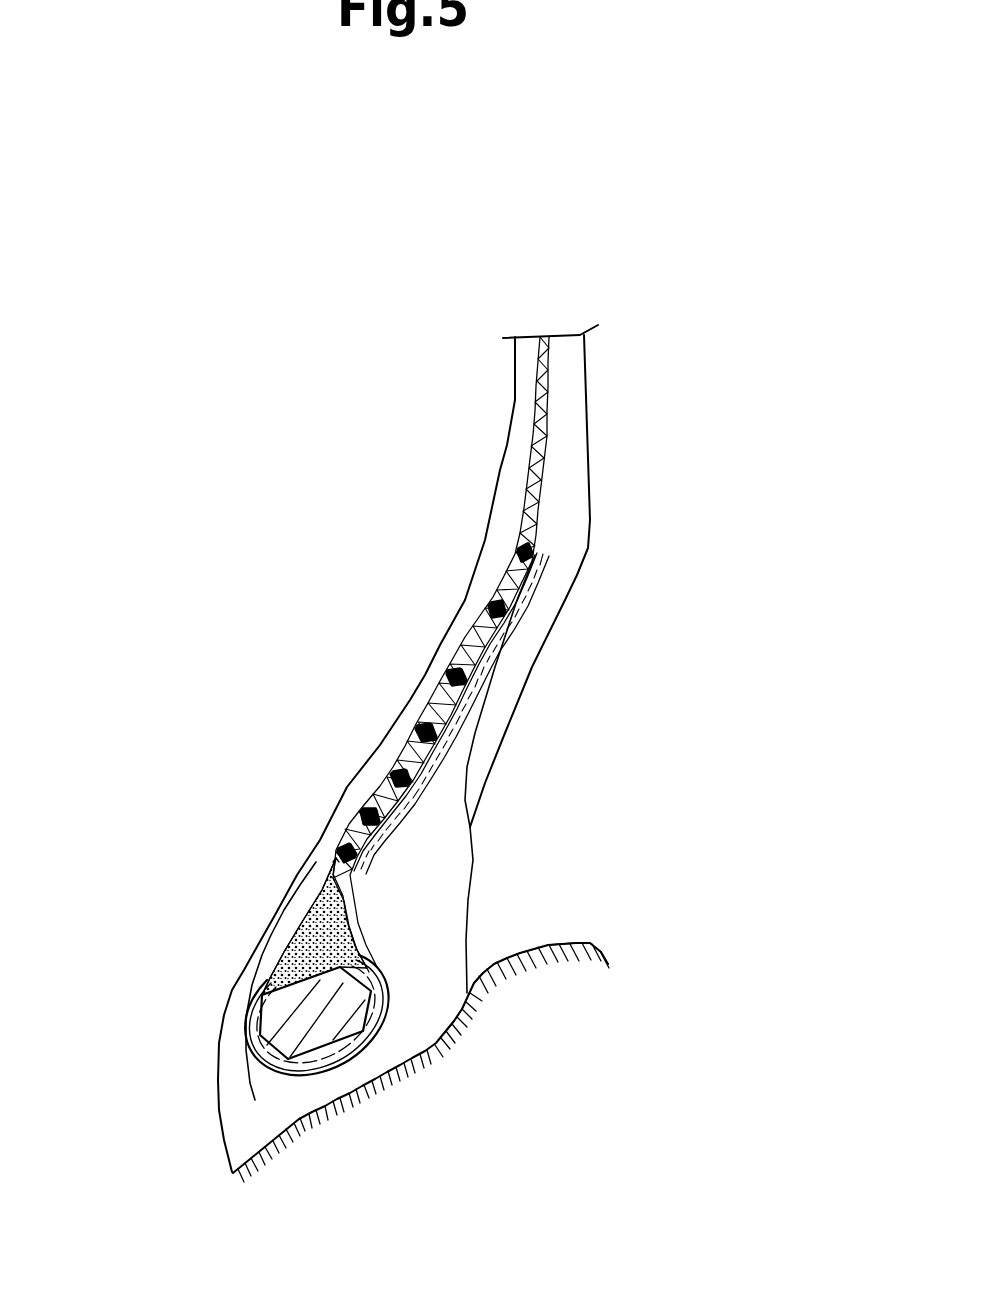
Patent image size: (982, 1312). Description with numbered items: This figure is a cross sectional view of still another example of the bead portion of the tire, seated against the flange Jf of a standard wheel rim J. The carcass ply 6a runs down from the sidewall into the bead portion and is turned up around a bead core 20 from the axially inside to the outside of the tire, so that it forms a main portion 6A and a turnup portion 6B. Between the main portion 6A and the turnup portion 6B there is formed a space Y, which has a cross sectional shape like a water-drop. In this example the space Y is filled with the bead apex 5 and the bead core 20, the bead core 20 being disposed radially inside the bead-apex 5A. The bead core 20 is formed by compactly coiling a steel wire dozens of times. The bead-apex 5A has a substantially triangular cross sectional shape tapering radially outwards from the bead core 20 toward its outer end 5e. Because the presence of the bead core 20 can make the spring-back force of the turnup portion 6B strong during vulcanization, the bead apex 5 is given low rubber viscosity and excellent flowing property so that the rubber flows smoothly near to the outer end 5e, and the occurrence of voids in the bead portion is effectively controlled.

The bead apex 5 is at (312, 935).
The bead-apex 5A is at (299, 926).
The outer end 5e is at (334, 858).
The main portion 6A is at (537, 483).
The turnup portion 6B is at (531, 578).
The carcass ply 6a is at (793, 452).
The bead core 20 is at (278, 1062).
The space Y is at (256, 978).
The flange Jf is at (547, 958).
The standard wheel rim J is at (526, 987).